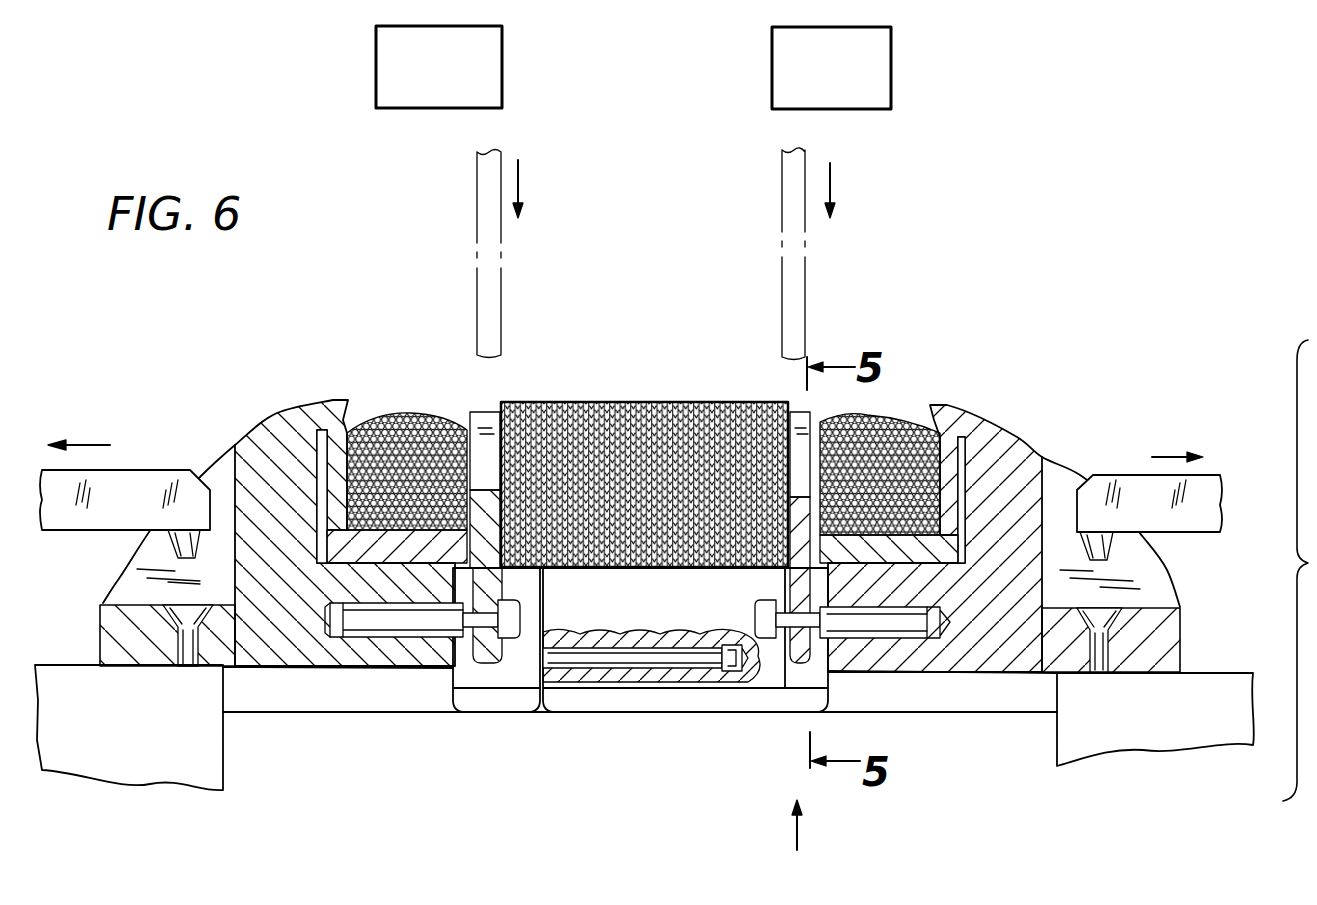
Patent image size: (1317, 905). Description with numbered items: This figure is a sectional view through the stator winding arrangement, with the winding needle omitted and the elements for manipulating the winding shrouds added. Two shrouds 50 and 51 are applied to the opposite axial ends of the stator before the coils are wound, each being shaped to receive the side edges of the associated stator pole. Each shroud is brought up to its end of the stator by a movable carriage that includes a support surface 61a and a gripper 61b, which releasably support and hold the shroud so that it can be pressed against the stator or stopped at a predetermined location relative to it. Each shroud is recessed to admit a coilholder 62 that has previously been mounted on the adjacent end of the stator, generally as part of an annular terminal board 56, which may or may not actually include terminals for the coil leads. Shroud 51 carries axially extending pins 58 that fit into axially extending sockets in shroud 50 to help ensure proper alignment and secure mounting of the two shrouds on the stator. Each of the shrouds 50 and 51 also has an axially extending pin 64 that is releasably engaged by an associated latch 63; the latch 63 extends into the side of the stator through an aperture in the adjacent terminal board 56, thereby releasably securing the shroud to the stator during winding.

The shroud 50 is at (997, 455).
The shroud 51 is at (283, 443).
The terminal board 56 is at (818, 406).
The axially extending pin 58 is at (658, 657).
The coilholder 62 is at (992, 568).
The latch 63 is at (798, 422).
The axially extending pin 64 is at (903, 622).
The support surface 61a is at (70, 676).
The gripper 61b is at (90, 517).